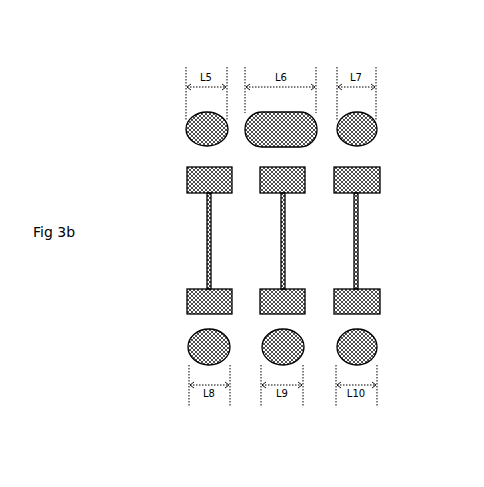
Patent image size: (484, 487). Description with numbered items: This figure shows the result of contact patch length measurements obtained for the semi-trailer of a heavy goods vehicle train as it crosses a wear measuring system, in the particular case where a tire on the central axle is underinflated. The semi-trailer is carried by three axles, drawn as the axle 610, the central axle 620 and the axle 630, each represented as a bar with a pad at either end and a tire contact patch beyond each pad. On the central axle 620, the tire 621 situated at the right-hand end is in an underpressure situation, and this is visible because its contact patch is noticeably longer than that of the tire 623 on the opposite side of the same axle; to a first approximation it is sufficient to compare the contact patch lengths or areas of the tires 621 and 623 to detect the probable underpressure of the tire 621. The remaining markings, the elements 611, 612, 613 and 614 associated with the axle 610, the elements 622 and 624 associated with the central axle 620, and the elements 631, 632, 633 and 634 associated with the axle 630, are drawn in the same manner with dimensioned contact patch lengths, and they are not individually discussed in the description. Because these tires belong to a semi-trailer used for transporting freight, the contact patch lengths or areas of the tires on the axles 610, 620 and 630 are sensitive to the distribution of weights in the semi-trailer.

The axle 610 is at (207, 217).
The first upper pad 611 is at (187, 181).
The first upper contact 612 is at (187, 130).
The first lower pad 613 is at (187, 300).
The first lower contact 614 is at (188, 345).
The central axle 620 is at (282, 230).
The tire 621 is at (295, 166).
The elongated upper contact 622 is at (246, 126).
The tire 623 is at (295, 289).
The second lower contact 624 is at (262, 349).
The axle 630 is at (356, 228).
The third upper pad 631 is at (380, 173).
The third upper contact 632 is at (378, 121).
The third lower pad 633 is at (380, 300).
The third lower contact 634 is at (378, 348).